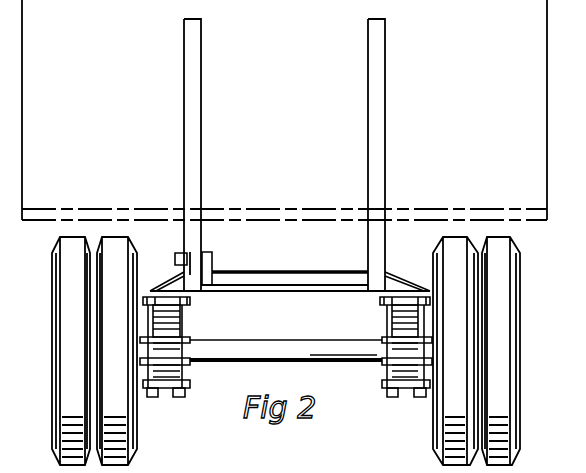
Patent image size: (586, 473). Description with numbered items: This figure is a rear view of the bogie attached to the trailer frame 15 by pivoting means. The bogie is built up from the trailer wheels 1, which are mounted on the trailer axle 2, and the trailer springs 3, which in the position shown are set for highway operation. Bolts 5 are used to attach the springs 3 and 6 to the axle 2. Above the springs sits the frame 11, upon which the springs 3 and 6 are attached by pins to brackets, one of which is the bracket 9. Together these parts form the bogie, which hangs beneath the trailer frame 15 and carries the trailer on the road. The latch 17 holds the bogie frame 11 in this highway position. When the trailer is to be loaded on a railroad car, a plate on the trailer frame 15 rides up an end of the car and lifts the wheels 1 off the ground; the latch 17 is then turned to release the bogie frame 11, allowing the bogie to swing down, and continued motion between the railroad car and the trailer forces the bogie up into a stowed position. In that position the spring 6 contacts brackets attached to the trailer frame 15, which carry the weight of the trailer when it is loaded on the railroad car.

The trailer wheels 1 is at (65, 402).
The trailer axle 2 is at (316, 360).
The trailer springs 3 is at (186, 322).
The bolts 5 is at (188, 375).
The spring 6 is at (162, 397).
The bracket 9 is at (177, 285).
The frame 11 is at (196, 295).
The trailer frame 15 is at (184, 239).
The latch 17 is at (207, 262).